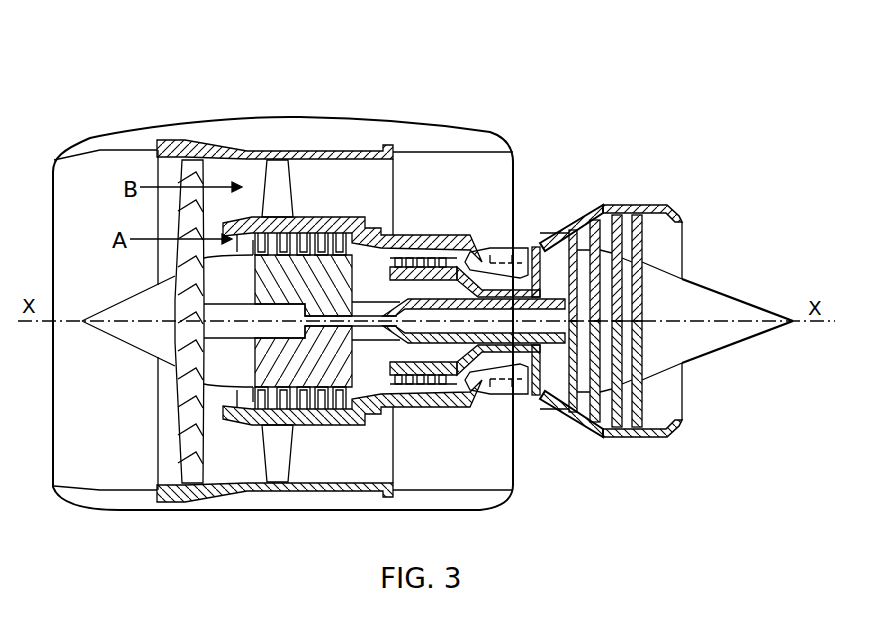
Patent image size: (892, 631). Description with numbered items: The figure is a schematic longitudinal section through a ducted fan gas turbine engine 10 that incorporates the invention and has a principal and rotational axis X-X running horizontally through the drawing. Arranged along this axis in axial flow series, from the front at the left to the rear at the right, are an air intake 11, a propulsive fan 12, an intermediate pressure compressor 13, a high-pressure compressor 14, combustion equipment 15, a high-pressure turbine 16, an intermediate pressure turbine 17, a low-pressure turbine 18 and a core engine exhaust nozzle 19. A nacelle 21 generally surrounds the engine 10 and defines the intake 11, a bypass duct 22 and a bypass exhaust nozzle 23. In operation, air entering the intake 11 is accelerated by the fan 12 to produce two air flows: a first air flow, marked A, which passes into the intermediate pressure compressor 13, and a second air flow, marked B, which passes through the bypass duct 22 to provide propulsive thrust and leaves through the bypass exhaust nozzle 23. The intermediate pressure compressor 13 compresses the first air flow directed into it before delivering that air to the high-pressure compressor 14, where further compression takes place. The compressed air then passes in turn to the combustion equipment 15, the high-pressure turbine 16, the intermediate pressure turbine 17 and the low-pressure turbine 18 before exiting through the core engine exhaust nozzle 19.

The ducted fan gas turbine engine 10 is at (96, 84).
The air intake 11 is at (102, 150).
The propulsive fan 12 is at (183, 444).
The intermediate pressure compressor 13 is at (316, 400).
The high-pressure compressor 14 is at (425, 256).
The combustion equipment 15 is at (490, 398).
The high-pressure turbine 16 is at (484, 388).
The intermediate pressure turbine 17 is at (572, 226).
The low-pressure turbine 18 is at (582, 431).
The core engine exhaust nozzle 19 is at (678, 207).
The nacelle 21 is at (320, 140).
The bypass duct 22 is at (471, 191).
The bypass exhaust nozzle 23 is at (513, 155).